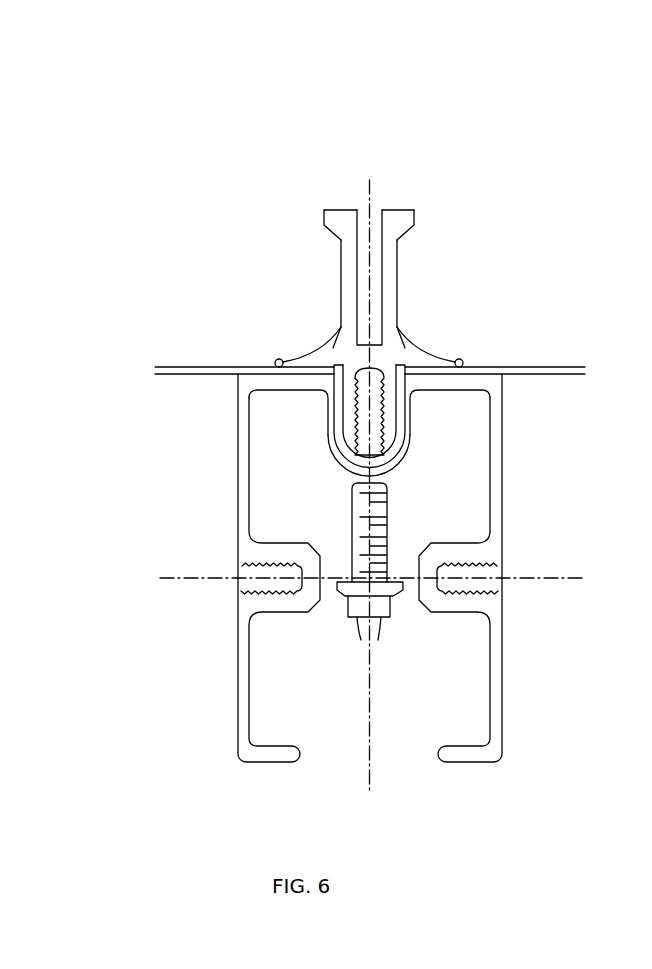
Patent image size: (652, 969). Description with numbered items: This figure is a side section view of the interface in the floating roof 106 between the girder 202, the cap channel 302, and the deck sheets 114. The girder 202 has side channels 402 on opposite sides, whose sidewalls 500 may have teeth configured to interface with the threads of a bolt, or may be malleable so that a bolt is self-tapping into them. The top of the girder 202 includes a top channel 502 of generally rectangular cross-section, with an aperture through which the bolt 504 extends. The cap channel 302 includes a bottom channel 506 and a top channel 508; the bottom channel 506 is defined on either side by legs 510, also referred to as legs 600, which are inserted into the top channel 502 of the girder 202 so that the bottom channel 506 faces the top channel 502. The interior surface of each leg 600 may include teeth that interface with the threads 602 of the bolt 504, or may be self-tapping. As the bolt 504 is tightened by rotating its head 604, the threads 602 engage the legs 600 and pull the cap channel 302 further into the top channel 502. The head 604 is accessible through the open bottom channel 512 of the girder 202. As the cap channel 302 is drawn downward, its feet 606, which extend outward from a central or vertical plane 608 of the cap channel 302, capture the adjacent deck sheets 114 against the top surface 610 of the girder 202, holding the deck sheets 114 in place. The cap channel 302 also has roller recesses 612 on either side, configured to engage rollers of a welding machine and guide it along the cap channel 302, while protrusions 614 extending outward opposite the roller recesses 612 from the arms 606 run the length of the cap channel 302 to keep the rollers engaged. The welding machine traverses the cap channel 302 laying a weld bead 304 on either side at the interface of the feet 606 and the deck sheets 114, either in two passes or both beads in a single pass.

The floating roof 106 is at (156, 236).
The deck sheets 114 is at (188, 376).
The girder 202 is at (504, 700).
The cap channel 302 is at (399, 210).
The weld bead 304 is at (278, 359).
The side channels 402 is at (282, 585).
The sidewalls 500 is at (492, 582).
The top channel 502 is at (356, 461).
The bolt 504 is at (380, 618).
The bottom channel 506 is at (392, 473).
The top channel 508 is at (369, 196).
The legs 510 is at (330, 421).
The bottom channel 512 is at (397, 742).
The legs 600 is at (352, 412).
The threads 602 is at (388, 540).
The head 604 is at (358, 620).
The feet 606 is at (330, 332).
The central or vertical plane 608 is at (369, 758).
The top surface 610 is at (276, 376).
The roller recesses 612 is at (316, 294).
The protrusions 614 is at (324, 213).